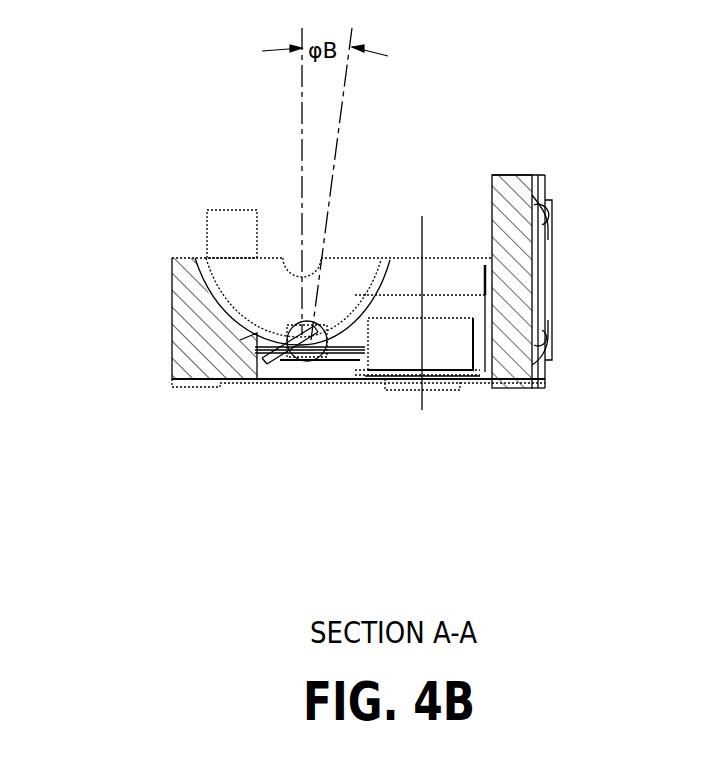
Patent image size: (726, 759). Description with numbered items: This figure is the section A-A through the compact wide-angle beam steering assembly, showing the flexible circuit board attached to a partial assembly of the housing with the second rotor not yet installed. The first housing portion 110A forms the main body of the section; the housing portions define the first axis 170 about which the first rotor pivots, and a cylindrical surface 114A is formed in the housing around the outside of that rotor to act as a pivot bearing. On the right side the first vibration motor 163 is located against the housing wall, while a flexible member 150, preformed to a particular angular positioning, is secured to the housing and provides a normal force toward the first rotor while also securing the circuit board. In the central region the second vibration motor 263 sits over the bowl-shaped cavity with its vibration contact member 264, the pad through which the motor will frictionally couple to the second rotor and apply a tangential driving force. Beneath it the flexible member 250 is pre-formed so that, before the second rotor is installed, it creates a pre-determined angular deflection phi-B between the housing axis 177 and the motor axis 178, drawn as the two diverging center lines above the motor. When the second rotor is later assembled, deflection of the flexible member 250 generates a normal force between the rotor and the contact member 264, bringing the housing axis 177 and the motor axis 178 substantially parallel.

The housing axis 177 is at (302, 176).
The motor axis 178 is at (328, 206).
The first axis 170 is at (423, 232).
The vibration contact member 264 is at (307, 330).
The flexible member 150 is at (549, 232).
The first housing portion 110A is at (172, 379).
The second vibration motor 263 is at (311, 342).
The flexible member 250 is at (410, 377).
The cylindrical surface 114A is at (431, 307).
The first vibration motor 163 is at (516, 362).